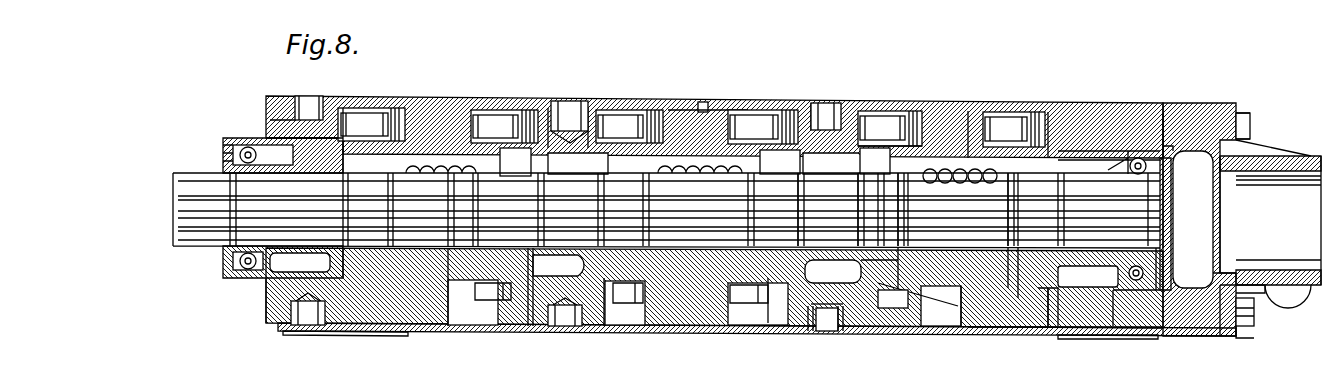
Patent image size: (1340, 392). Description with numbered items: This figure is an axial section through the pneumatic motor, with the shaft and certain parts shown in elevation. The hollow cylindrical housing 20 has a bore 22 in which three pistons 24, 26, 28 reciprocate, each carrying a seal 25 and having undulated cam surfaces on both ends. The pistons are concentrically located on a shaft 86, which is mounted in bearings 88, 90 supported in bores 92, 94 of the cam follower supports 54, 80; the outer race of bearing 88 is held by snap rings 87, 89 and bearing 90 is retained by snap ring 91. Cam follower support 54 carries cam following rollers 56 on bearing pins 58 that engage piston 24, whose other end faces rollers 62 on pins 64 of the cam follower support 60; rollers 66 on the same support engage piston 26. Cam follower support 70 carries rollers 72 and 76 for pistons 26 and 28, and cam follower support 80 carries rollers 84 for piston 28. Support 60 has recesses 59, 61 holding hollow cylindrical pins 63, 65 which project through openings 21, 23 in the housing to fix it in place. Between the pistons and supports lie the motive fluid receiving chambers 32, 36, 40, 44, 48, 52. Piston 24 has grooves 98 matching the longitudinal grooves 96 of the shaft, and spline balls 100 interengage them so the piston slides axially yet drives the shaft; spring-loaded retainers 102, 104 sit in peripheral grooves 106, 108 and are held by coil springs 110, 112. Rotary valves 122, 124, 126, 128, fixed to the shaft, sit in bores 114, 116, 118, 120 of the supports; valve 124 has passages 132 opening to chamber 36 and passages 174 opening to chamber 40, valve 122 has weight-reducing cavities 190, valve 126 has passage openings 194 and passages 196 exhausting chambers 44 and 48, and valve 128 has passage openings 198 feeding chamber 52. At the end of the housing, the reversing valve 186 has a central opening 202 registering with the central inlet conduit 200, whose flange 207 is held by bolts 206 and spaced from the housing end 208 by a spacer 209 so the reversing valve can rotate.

The housing 20 is at (1010, 320).
The opening 21 is at (548, 140).
The bore 22 is at (694, 96).
The opening 23 is at (820, 322).
The piston 24 is at (956, 104).
The seal 25 is at (424, 98).
The piston 26 is at (710, 102).
The piston 28 is at (438, 100).
The motive fluid receiving chamber 32 is at (1040, 300).
The motive fluid receiving chamber 36 is at (926, 316).
The motive fluid receiving chamber 40 is at (756, 316).
The motive fluid receiving chamber 44 is at (616, 318).
The motive fluid receiving chamber 48 is at (457, 300).
The motive fluid receiving chamber 52 is at (358, 318).
The cam follower support 54 is at (1102, 320).
The cam following rollers 56 is at (994, 108).
The bearing pins 58 is at (1016, 100).
The recess 59 is at (812, 94).
The cam follower support 60 is at (846, 300).
The recess 61 is at (806, 321).
The cam follower rollers 62 is at (890, 114).
The hollow cylindrical pin 63 is at (823, 100).
The pins 64 is at (875, 110).
The hollow cylindrical pin 65 is at (842, 322).
The cam follower rollers 66 is at (738, 104).
The cam follower support 70 is at (538, 318).
The cam follower rollers 72 is at (618, 104).
The cam follower rollers 76 is at (500, 104).
The cam follower support 80 is at (266, 293).
The cam follower rollers 84 is at (365, 112).
The shaft 86 is at (192, 168).
The snap ring 87 is at (1202, 248).
The bearing 88 is at (1157, 175).
The snap ring 89 is at (1110, 288).
The bearing 90 is at (236, 262).
The snap ring 91 is at (222, 243).
The bore 92 is at (1140, 157).
The bore 94 is at (218, 138).
The longitudinal grooves 96 is at (976, 250).
The grooves 98 is at (906, 164).
The spline balls 100 is at (968, 166).
The spring-loaded retainer 102 is at (1000, 250).
The spring-loaded retainer 104 is at (890, 225).
The peripheral groove 106 is at (1030, 287).
The peripheral groove 108 is at (900, 240).
The coil spring 110 is at (998, 262).
The coil spring 112 is at (901, 268).
The bore 114 is at (1034, 284).
The bore 116 is at (920, 292).
The bore 118 is at (520, 275).
The bore 120 is at (306, 260).
The rotary valve 122 is at (1102, 162).
The rotary valve 124 is at (795, 250).
The rotary valve 126 is at (550, 115).
The rotary valve 128 is at (262, 100).
The passages 132 is at (815, 265).
The passages 174 is at (840, 153).
The reversing valve 186 is at (1200, 248).
The cavities 190 is at (1104, 270).
The passage openings 194 is at (560, 150).
The passages 196 is at (568, 262).
The passage openings 198 is at (284, 142).
The central inlet conduit 200 is at (1305, 150).
The central opening 202 is at (1212, 220).
The bolts 206 is at (1246, 114).
The flange 207 is at (1215, 328).
The end of the housing 208 is at (1166, 100).
The spacer 209 is at (1186, 100).